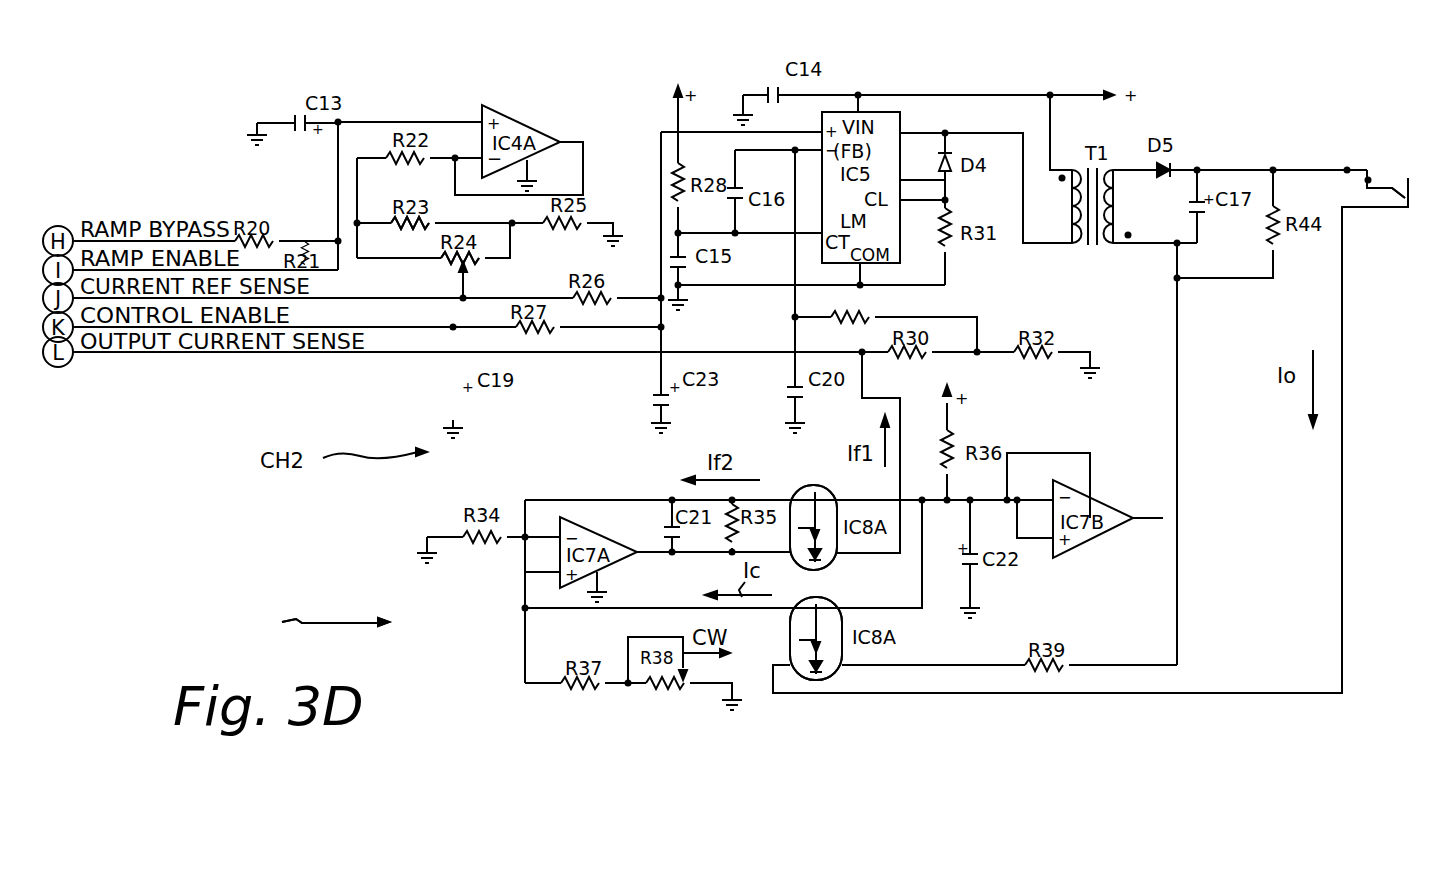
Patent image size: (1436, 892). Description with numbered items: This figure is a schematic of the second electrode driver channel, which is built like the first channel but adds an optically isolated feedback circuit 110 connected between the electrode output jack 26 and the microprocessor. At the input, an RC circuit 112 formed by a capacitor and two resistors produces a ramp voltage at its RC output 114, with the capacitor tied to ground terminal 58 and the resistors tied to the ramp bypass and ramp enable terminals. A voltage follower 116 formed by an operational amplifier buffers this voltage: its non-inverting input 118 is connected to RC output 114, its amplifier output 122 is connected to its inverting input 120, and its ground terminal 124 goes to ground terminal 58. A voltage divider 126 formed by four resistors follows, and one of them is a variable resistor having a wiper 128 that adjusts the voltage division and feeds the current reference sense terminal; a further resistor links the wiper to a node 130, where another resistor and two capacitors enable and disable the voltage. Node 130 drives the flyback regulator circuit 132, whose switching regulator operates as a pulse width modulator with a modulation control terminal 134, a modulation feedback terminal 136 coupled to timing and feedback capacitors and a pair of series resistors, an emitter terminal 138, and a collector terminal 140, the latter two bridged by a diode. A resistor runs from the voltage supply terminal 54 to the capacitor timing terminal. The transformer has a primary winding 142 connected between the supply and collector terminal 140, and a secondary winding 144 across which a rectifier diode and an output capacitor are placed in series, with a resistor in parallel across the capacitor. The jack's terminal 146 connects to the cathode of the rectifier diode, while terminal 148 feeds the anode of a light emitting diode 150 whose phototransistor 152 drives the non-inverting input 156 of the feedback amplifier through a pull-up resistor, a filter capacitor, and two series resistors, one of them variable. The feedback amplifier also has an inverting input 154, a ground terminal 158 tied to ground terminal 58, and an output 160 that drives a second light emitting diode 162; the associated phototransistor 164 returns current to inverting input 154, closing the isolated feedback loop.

The electrode output jack 26 is at (1375, 148).
The voltage supply terminal 54 is at (948, 412).
The ground terminal 58 is at (720, 700).
The optically isolated feedback circuit 110 is at (315, 622).
The RC circuit 112 is at (342, 100).
The RC output 114 is at (349, 120).
The voltage follower 116 is at (518, 113).
The non-inverting input 118 is at (470, 120).
The inverting input 120 is at (459, 157).
The amplifier output 122 is at (568, 140).
The ground terminal 124 is at (533, 155).
The voltage divider 126 is at (388, 212).
The wiper 128 is at (467, 283).
The node 130 is at (663, 316).
The flyback regulator circuit 132 is at (946, 62).
The modulation control terminal 134 is at (807, 130).
The modulation feedback terminal 136 is at (735, 150).
The emitter terminal 138 is at (945, 180).
The collector terminal 140 is at (924, 133).
The primary winding 142 is at (1070, 168).
The secondary winding 144 is at (1118, 166).
The terminal 146 is at (1340, 170).
The terminal 148 is at (1383, 212).
The light emitting diode 150 is at (821, 680).
The phototransistor 152 is at (829, 597).
The inverting input 154 is at (543, 538).
The non-inverting input 156 is at (534, 564).
The ground terminal 158 is at (603, 570).
The output 160 is at (645, 552).
The light emitting diode 162 is at (831, 576).
The phototransistor 164 is at (817, 485).